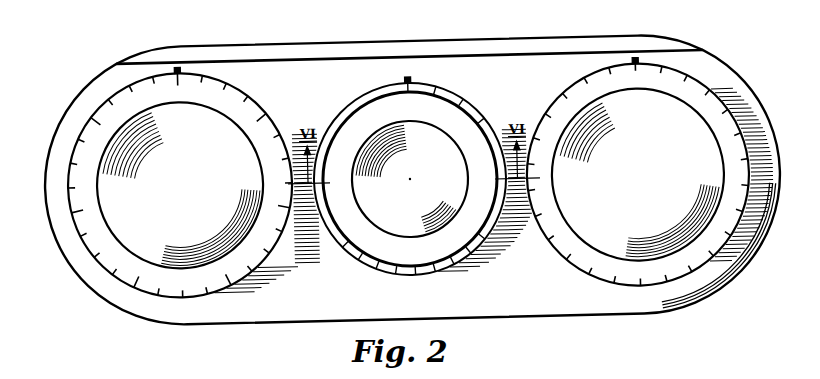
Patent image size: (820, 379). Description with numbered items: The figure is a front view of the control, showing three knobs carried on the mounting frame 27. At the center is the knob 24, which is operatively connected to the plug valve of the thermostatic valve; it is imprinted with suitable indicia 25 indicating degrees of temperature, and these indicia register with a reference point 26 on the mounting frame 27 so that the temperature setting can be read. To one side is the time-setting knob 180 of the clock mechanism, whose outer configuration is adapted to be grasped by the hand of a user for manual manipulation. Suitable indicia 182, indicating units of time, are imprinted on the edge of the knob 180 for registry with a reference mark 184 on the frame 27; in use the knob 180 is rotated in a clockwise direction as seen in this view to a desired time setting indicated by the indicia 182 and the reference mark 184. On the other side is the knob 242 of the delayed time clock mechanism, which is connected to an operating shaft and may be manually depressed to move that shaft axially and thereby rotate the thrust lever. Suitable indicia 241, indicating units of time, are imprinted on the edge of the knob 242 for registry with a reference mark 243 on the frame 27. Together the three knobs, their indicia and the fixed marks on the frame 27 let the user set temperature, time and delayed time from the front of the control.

The mounting frame 27 is at (173, 41).
The reference mark 243 is at (182, 62).
The indicia 241 is at (98, 120).
The knob 242 is at (165, 186).
The knob 24 is at (364, 102).
The indicia 25 is at (347, 237).
The reference point 26 is at (411, 79).
The reference mark 184 is at (638, 63).
The indicia 182 is at (724, 114).
The time-setting knob 180 is at (622, 174).